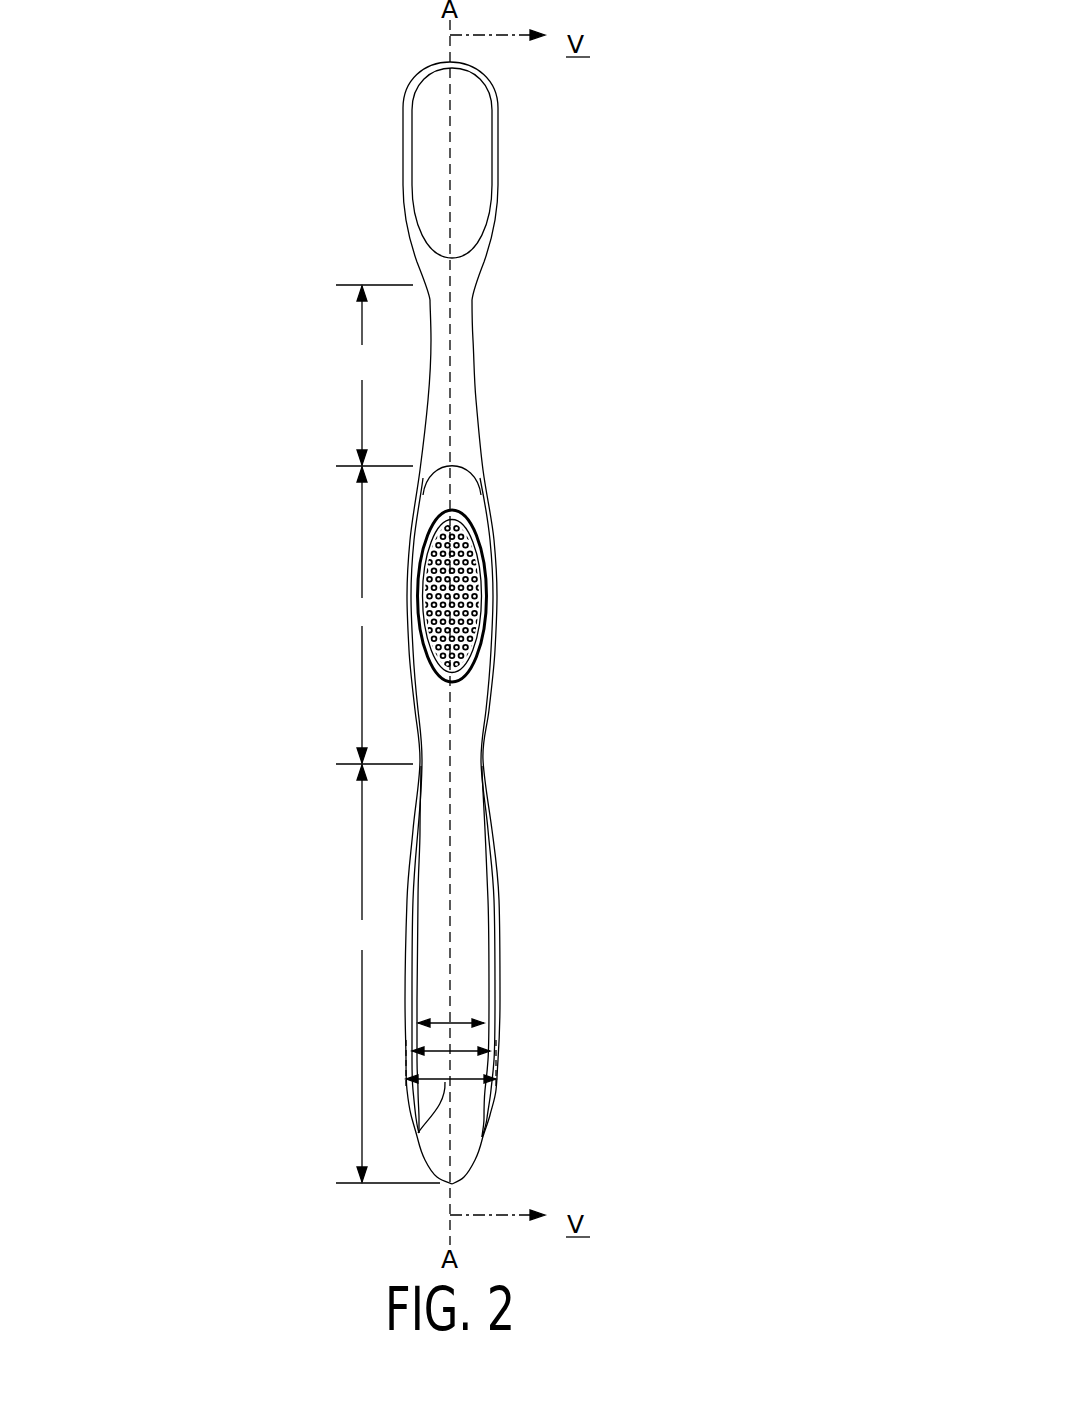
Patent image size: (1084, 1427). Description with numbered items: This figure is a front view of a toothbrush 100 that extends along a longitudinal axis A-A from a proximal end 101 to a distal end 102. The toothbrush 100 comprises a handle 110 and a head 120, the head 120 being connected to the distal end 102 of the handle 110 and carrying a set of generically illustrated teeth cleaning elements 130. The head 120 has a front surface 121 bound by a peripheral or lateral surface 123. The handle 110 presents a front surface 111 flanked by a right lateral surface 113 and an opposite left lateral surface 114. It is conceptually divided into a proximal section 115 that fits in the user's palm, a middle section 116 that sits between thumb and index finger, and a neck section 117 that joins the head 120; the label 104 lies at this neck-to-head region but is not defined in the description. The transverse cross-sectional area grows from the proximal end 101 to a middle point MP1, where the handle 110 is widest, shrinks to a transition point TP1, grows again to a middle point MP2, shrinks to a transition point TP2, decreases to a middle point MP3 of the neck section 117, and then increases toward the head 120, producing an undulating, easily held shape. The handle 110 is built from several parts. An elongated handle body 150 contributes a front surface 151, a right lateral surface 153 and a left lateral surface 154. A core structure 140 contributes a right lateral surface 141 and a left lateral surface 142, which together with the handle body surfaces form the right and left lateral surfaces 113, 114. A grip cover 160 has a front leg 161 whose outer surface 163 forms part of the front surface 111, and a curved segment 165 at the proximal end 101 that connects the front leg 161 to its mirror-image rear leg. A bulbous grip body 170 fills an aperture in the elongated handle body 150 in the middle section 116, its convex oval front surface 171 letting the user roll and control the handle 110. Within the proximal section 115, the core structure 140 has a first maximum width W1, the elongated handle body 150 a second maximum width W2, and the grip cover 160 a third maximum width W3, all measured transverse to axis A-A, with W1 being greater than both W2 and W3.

The toothbrush 100 is at (750, 129).
The proximal end 101 is at (452, 1187).
The distal end 102 is at (449, 60).
The neck region 104 is at (442, 276).
The handle 110 is at (280, 843).
The front surface 111 is at (458, 302).
The right lateral surface 113 is at (508, 710).
The left lateral surface 114 is at (396, 677).
The proximal section 115 is at (362, 936).
The middle section 116 is at (362, 613).
The neck section 117 is at (362, 363).
The head 120 is at (536, 186).
The front surface 121 is at (492, 232).
The peripheral or lateral surface 123 is at (498, 108).
The teeth cleaning elements 130 is at (398, 126).
The core structure 140 is at (513, 935).
The right lateral surface 141 is at (503, 988).
The left lateral surface 142 is at (410, 990).
The elongated handle body 150 is at (490, 416).
The front surface 151 is at (464, 399).
The right lateral surface 153 is at (484, 485).
The left lateral surface 154 is at (422, 452).
The grip cover 160 is at (485, 1148).
The front leg 161 is at (463, 897).
The outer surface 163 is at (468, 1090).
The curved segment 165 is at (437, 1165).
The grip body 170 is at (494, 630).
The front surface 171 is at (465, 592).
The middle point MP1 is at (501, 968).
The middle point MP2 is at (498, 597).
The middle point MP3 is at (474, 365).
The transition point TP1 is at (484, 762).
The transition point TP2 is at (481, 466).
The first maximum width W1 is at (426, 1116).
The second maximum width W2 is at (466, 1052).
The third maximum width W3 is at (465, 1025).